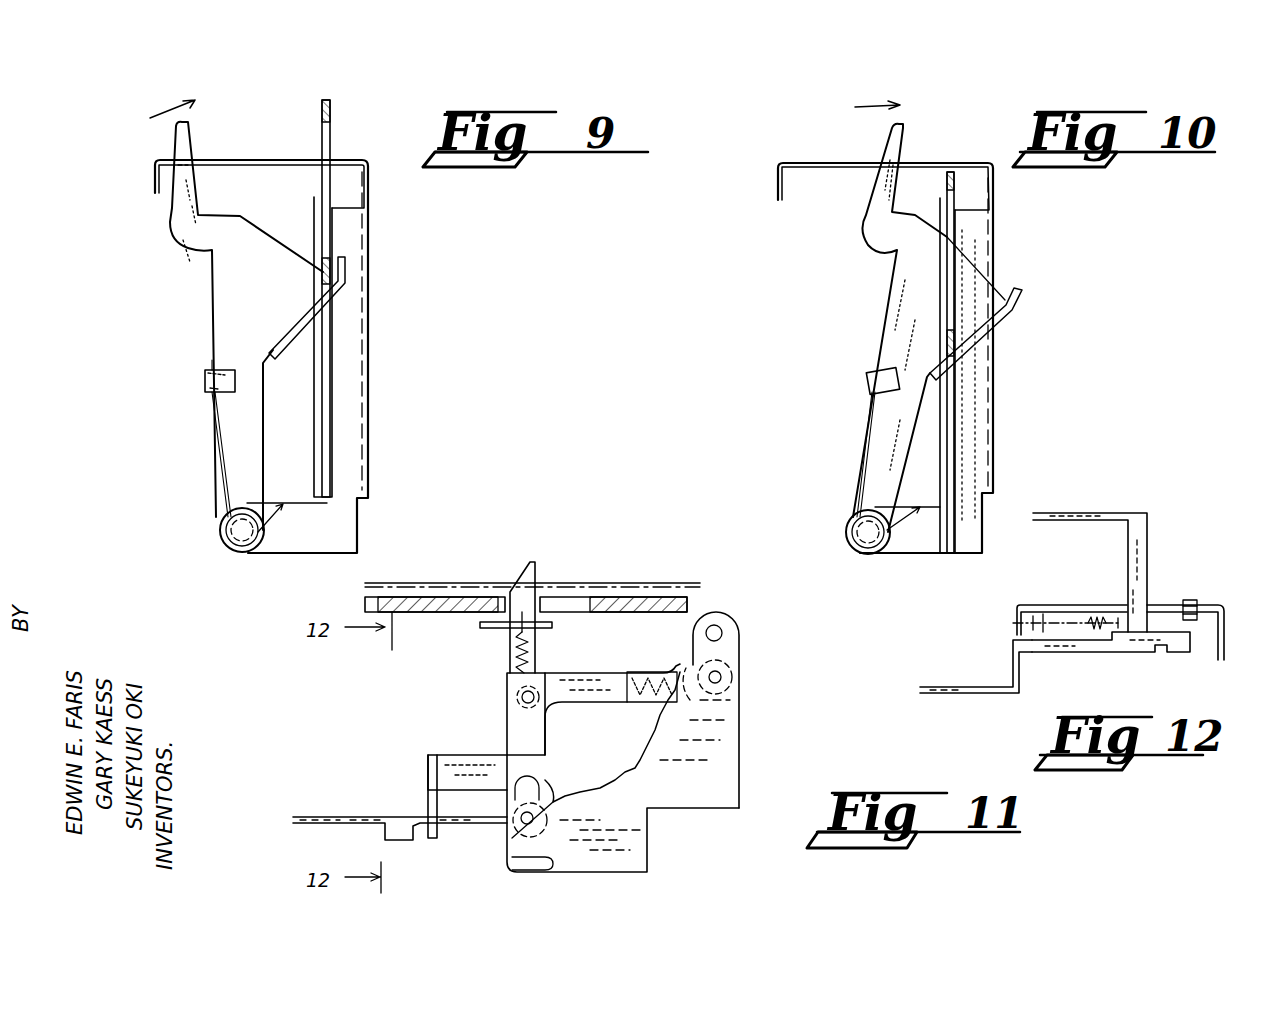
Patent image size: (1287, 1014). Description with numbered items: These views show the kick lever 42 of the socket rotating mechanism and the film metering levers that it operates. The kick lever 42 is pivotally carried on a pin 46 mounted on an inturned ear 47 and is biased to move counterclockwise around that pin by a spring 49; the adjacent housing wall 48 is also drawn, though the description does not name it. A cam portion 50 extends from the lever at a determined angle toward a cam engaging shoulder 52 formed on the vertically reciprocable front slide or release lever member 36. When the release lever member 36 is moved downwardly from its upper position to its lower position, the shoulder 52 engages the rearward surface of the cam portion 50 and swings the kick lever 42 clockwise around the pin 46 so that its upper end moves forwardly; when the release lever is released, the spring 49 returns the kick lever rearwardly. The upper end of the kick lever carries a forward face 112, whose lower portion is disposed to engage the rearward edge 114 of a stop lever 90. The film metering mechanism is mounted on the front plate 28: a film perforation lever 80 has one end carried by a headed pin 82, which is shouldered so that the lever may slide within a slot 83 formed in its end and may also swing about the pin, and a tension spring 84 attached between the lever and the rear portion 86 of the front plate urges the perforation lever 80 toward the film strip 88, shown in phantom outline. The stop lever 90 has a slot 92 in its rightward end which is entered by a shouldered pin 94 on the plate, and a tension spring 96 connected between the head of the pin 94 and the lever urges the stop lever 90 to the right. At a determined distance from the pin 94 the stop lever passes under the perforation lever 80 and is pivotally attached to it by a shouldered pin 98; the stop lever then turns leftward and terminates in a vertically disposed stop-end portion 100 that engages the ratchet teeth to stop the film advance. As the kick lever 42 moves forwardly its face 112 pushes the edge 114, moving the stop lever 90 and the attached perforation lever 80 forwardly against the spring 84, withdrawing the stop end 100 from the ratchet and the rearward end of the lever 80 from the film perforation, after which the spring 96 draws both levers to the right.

In FIG. 11, the front plate 28 is at (737, 765).
In FIG. 12, the front plate 28 is at (1226, 650).
In FIG. 9, the release lever member 36 is at (325, 412).
In FIG. 10, the release lever member 36 is at (990, 448).
In FIG. 9, the kick lever 42 is at (215, 293).
In FIG. 10, the kick lever 42 is at (898, 286).
In FIG. 9, the pin 46 is at (240, 540).
In FIG. 10, the pin 46 is at (866, 544).
In FIG. 9, the inturned ear 47 is at (296, 545).
In FIG. 10, the inturned ear 47 is at (928, 545).
In FIG. 9, the housing wall 48 is at (368, 465).
In FIG. 9, the spring 49 is at (220, 498).
In FIG. 10, the spring 49 is at (858, 505).
In FIG. 9, the cam portion 50 is at (298, 343).
In FIG. 10, the cam portion 50 is at (1014, 317).
In FIG. 9, the cam engaging shoulder 52 is at (342, 262).
In FIG. 10, the cam engaging shoulder 52 is at (958, 356).
In FIG. 11, the film perforation lever 80 is at (512, 645).
In FIG. 12, the film perforation lever 80 is at (972, 687).
In FIG. 11, the headed pin 82 is at (518, 838).
In FIG. 12, the headed pin 82 is at (1195, 601).
In FIG. 11, the slot 83 is at (545, 782).
In FIG. 11, the tension spring 84 is at (520, 664).
In FIG. 12, the tension spring 84 is at (1097, 617).
In FIG. 9, the rear portion 86 is at (152, 188).
In FIG. 11, the rear portion 86 is at (545, 624).
In FIG. 12, the rear portion 86 is at (1016, 618).
In FIG. 11, the film strip 88 is at (562, 580).
In FIG. 11, the stop lever 90 is at (445, 777).
In FIG. 12, the stop lever 90 is at (1108, 652).
In FIG. 11, the slot 92 is at (716, 645).
In FIG. 11, the shouldered pin 94 is at (722, 677).
In FIG. 11, the tension spring 96 is at (663, 665).
In FIG. 11, the shouldered pin 98 is at (512, 697).
In FIG. 11, the stop-end portion 100 is at (428, 808).
In FIG. 12, the stop-end portion 100 is at (1128, 513).
In FIG. 9, the forward face 112 is at (197, 178).
In FIG. 10, the forward face 112 is at (898, 178).
In FIG. 11, the rearward edge 114 is at (473, 758).